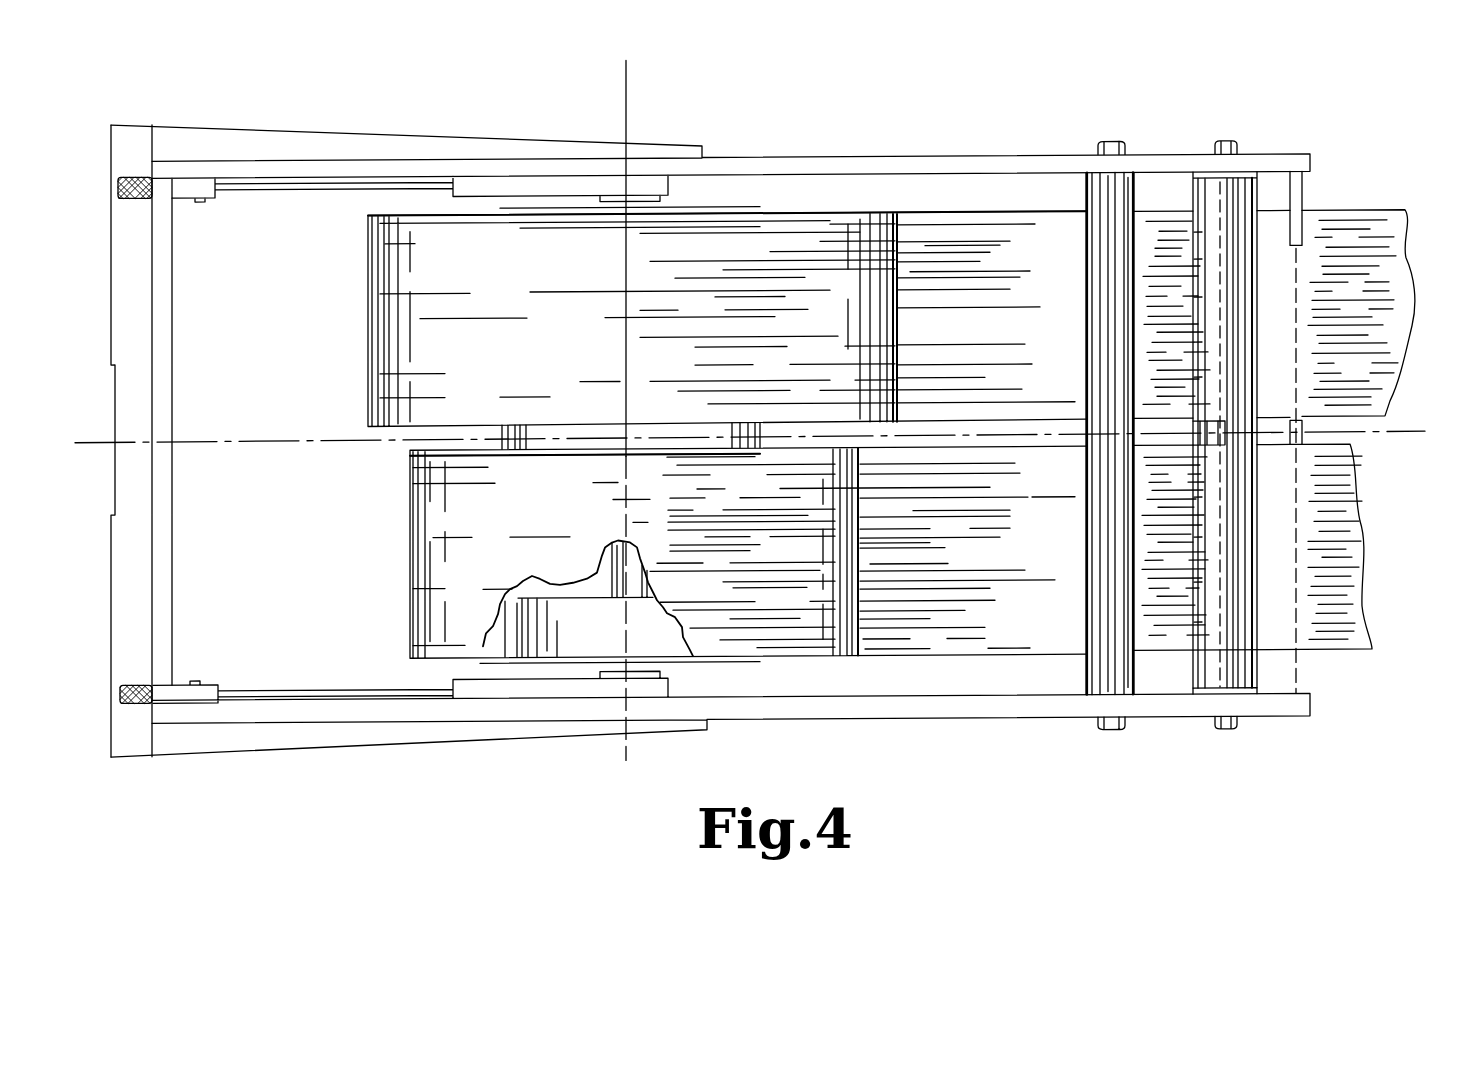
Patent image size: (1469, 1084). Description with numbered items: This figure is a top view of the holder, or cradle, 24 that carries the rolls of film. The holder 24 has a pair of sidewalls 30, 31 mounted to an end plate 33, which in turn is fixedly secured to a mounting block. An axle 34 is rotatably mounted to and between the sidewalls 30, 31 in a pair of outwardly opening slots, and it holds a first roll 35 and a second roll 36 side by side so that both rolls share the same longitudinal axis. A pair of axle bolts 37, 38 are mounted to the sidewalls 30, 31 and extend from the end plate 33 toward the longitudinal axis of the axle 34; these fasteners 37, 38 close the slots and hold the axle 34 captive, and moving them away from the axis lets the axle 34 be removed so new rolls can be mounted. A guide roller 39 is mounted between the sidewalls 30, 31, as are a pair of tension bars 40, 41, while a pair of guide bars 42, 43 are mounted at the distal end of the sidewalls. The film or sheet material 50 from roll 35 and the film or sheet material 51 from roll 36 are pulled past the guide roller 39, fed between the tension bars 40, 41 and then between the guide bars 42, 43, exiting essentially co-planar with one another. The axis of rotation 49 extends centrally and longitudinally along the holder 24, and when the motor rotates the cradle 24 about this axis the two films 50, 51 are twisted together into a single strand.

The holder 24 is at (835, 117).
The sidewall 30 is at (960, 159).
The sidewall 31 is at (920, 713).
The end plate 33 is at (114, 521).
The axle 34 is at (623, 602).
The first roll 35 is at (372, 336).
The second roll 36 is at (626, 42).
The axle bolt 37 is at (118, 186).
The axle bolt 38 is at (120, 696).
The guide roller 39 is at (1090, 667).
The tension bar 40 is at (1196, 208).
The tension bar 41 is at (1252, 686).
The guide bar 42 is at (1302, 219).
The guide bar 43 is at (1302, 432).
The axis of rotation 49 is at (205, 437).
The film or sheet material 50 is at (1400, 239).
The film or sheet material 51 is at (1350, 654).